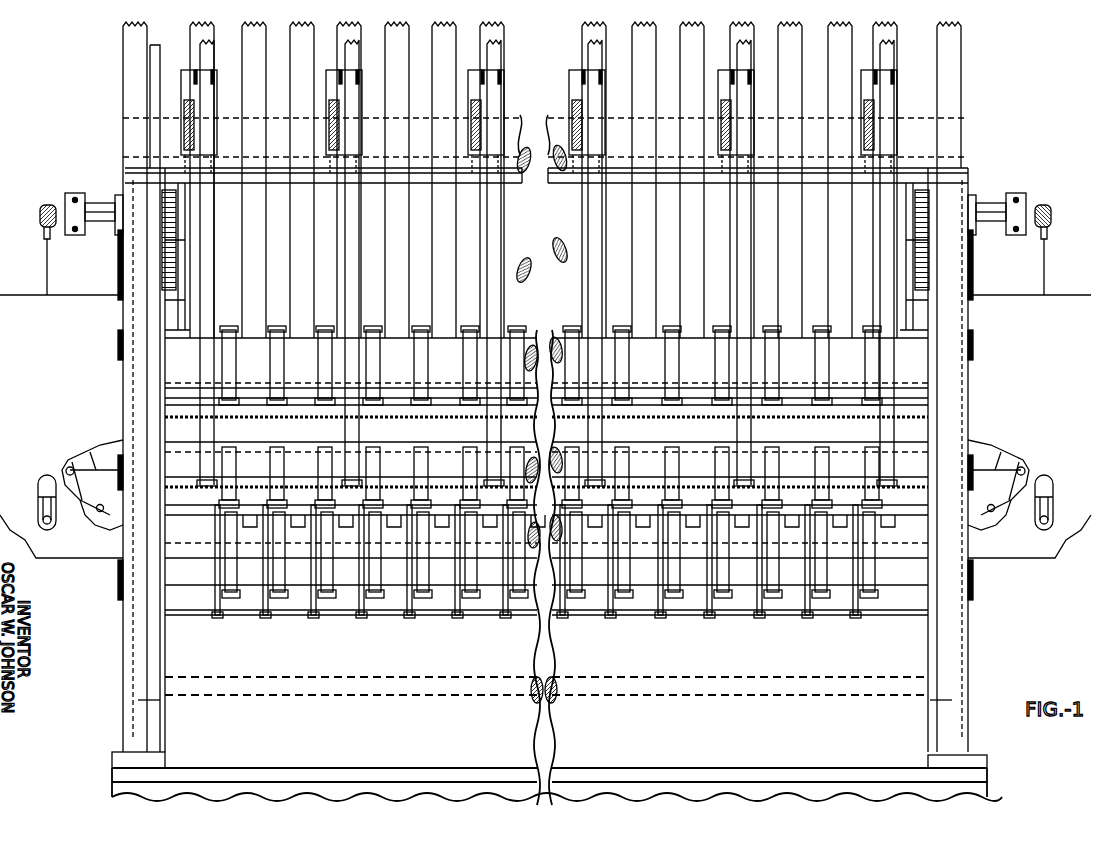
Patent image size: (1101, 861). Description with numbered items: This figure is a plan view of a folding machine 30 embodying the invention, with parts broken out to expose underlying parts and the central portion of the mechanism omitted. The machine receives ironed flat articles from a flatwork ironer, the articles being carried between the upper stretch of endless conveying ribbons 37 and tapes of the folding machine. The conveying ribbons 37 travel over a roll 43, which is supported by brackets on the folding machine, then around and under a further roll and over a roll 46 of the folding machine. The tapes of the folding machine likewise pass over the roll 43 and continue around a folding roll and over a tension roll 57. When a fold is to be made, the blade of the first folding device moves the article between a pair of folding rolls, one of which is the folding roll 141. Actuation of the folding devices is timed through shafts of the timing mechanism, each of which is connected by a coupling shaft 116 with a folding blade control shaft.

The folding machine 30 is at (138, 672).
The endless conveying ribbons 37 is at (258, 92).
The roll 43 is at (520, 160).
The roll 46 is at (520, 280).
The tension roll 57 is at (502, 80).
The coupling shaft 116 is at (92, 455).
The folding roll 141 is at (293, 480).